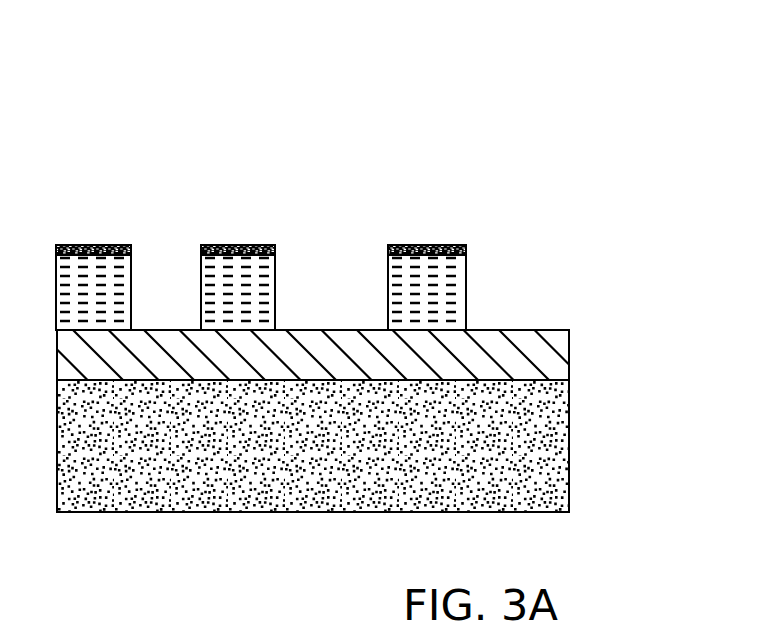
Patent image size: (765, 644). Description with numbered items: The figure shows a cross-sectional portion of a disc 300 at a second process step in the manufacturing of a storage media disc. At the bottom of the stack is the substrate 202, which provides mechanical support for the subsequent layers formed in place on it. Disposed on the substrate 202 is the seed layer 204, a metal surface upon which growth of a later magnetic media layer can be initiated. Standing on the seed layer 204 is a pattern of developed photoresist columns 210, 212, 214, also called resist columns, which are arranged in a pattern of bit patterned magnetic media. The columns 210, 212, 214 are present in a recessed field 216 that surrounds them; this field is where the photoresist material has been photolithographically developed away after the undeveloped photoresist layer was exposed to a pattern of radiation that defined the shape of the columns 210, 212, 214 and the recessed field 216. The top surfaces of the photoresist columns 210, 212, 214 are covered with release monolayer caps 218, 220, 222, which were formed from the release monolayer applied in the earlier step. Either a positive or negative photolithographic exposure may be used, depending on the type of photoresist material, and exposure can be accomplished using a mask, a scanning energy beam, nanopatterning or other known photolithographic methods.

The disc 300 is at (352, 124).
The substrate 202 is at (570, 437).
The seed layer 204 is at (570, 355).
The photoresist column 210 is at (131, 277).
The photoresist column 212 is at (275, 283).
The photoresist column 214 is at (467, 288).
The recessed field 216 is at (192, 319).
The release monolayer cap 218 is at (96, 245).
The release monolayer cap 220 is at (250, 245).
The release monolayer cap 222 is at (442, 245).